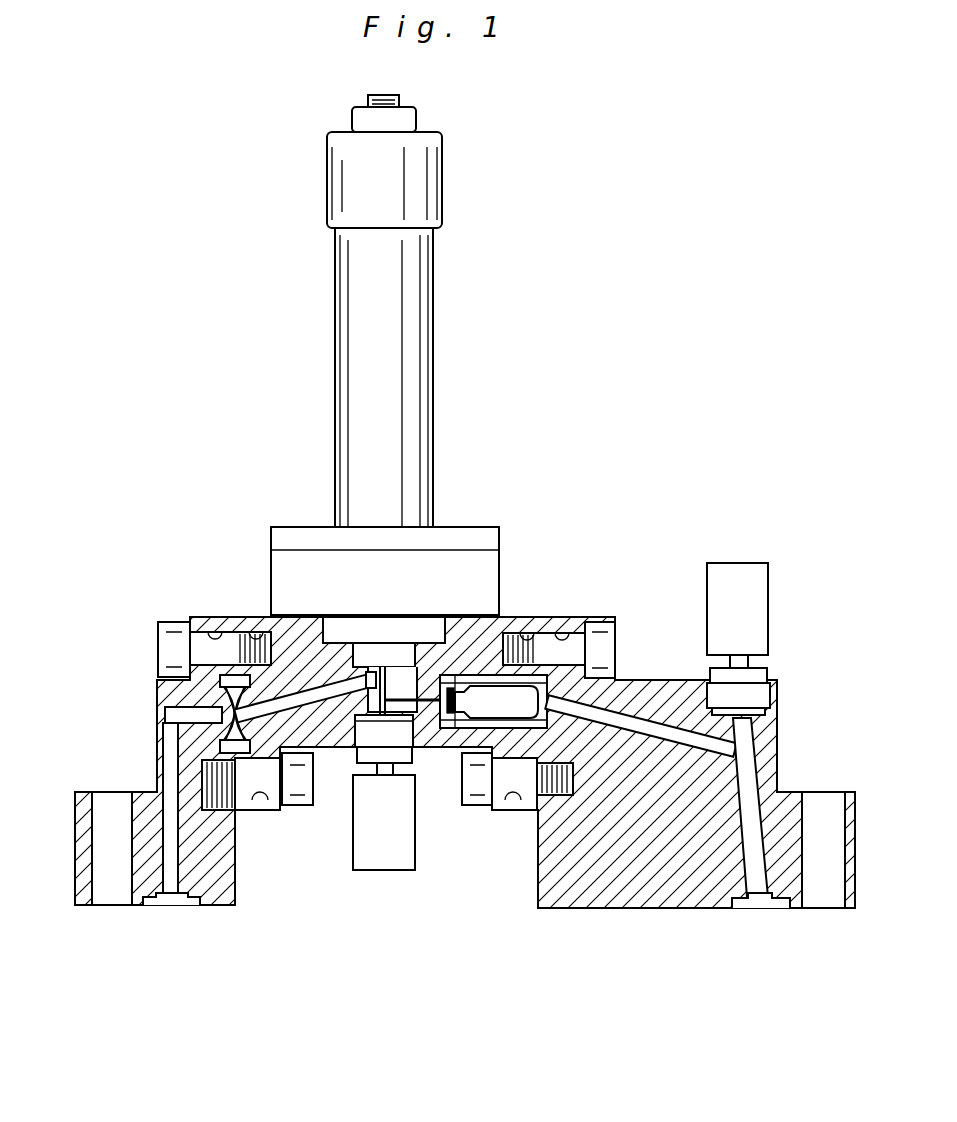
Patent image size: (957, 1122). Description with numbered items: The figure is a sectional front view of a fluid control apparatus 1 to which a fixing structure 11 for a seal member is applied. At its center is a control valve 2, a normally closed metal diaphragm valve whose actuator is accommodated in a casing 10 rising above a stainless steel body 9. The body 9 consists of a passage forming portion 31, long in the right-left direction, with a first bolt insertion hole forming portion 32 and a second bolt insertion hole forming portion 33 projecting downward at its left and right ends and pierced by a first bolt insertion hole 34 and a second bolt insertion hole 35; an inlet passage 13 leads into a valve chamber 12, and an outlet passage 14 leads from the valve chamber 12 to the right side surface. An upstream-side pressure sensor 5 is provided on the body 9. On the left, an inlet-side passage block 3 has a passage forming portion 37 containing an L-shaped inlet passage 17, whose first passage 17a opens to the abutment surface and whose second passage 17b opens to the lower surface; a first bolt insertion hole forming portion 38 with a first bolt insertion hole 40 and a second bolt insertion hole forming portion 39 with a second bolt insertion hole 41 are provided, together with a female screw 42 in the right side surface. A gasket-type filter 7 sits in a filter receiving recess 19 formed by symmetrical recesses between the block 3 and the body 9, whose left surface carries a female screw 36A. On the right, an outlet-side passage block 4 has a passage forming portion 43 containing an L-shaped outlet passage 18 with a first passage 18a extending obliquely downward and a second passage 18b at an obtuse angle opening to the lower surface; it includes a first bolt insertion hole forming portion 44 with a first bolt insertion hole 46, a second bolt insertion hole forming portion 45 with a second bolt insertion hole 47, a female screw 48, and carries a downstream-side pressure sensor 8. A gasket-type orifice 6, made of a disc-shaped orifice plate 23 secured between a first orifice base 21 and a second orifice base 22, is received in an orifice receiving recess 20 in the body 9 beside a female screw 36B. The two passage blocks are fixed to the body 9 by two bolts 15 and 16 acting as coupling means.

The fluid control apparatus 1 is at (615, 464).
The control valve 2 is at (433, 383).
The inlet-side passage block 3 is at (233, 906).
The outlet-side passage block 4 is at (705, 975).
The upstream-side pressure sensor 5 is at (390, 872).
The gasket-type orifice 6 is at (490, 678).
The gasket-type filter 7 is at (222, 700).
The downstream-side pressure sensor 8 is at (768, 600).
The body 9 is at (240, 620).
The casing 10 is at (335, 318).
The fixing structure 11 is at (153, 621).
The valve chamber 12 is at (362, 645).
The inlet passage 13 is at (330, 702).
The outlet passage 14 is at (407, 705).
The bolt 15 is at (168, 650).
The bolt 16 is at (300, 792).
The inlet passage 17 is at (170, 895).
The first passage 17a is at (188, 718).
The second passage 17b is at (228, 897).
The outlet passage 18 is at (745, 778).
The first passage 18a is at (730, 740).
The second passage 18b is at (748, 800).
The filter receiving recess 19 is at (230, 745).
The orifice receiving recess 20 is at (497, 790).
The first orifice base 21 is at (437, 705).
The second orifice base 22 is at (590, 705).
The orifice plate 23 is at (472, 722).
The passage forming portion 31 is at (291, 620).
The first bolt insertion hole forming portion 32 is at (248, 812).
The second bolt insertion hole forming portion 33 is at (560, 790).
The first bolt insertion hole 34 is at (268, 806).
The second bolt insertion hole 35 is at (520, 800).
The female screw 36A is at (252, 632).
The female screw 36B is at (522, 630).
The passage forming portion 37 is at (233, 850).
The first bolt insertion hole forming portion 38 is at (197, 626).
The second bolt insertion hole forming portion 39 is at (86, 870).
The first bolt insertion hole 40 is at (210, 630).
The second bolt insertion hole 41 is at (110, 880).
The female screw 42 is at (215, 775).
The passage forming portion 43 is at (634, 908).
The first bolt insertion hole forming portion 44 is at (560, 632).
The second bolt insertion hole forming portion 45 is at (850, 896).
The first bolt insertion hole 46 is at (590, 638).
The second bolt insertion hole 47 is at (803, 896).
The female screw 48 is at (563, 905).